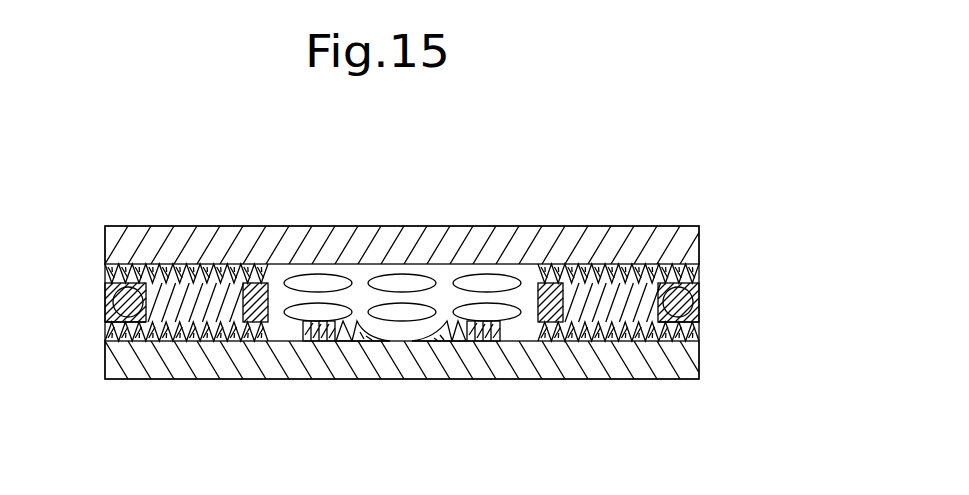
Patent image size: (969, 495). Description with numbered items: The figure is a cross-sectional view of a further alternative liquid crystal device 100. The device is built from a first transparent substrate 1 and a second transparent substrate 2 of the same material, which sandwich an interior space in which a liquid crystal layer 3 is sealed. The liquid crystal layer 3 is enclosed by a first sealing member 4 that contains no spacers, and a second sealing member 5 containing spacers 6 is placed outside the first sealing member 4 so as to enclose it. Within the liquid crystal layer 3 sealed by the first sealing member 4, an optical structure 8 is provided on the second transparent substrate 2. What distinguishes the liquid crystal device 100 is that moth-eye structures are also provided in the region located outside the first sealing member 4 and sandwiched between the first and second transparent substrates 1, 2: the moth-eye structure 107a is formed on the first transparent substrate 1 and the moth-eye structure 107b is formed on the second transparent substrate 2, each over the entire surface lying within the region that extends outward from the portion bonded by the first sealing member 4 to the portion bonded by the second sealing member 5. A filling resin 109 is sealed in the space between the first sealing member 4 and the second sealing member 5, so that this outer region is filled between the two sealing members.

The liquid crystal device 100 is at (594, 157).
The first transparent substrate 1 is at (178, 226).
The second transparent substrate 2 is at (180, 379).
The liquid crystal layer 3 is at (358, 295).
The first sealing member 4 is at (266, 322).
The second sealing member 5 is at (110, 318).
The spacer 6 is at (112, 296).
The optical structure 8 is at (434, 345).
The moth-eye structure 107a is at (204, 276).
The moth-eye structure 107b is at (232, 330).
The filling resin 109 is at (153, 318).